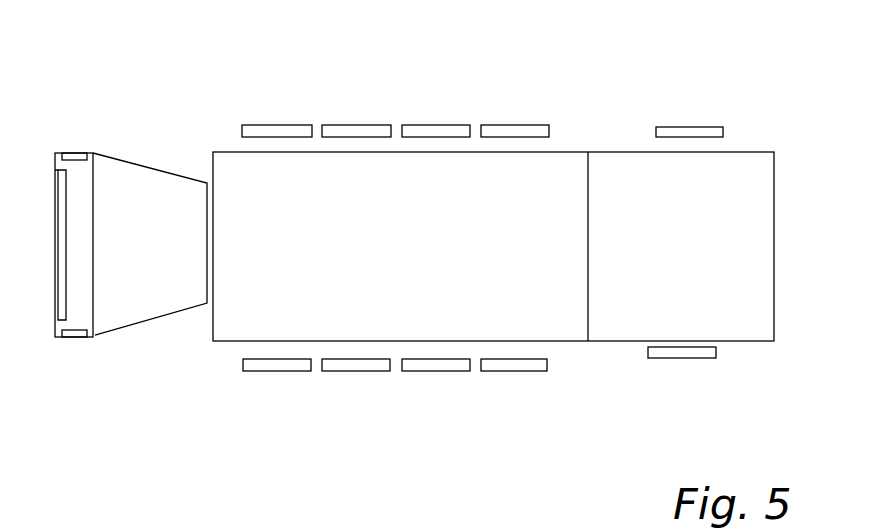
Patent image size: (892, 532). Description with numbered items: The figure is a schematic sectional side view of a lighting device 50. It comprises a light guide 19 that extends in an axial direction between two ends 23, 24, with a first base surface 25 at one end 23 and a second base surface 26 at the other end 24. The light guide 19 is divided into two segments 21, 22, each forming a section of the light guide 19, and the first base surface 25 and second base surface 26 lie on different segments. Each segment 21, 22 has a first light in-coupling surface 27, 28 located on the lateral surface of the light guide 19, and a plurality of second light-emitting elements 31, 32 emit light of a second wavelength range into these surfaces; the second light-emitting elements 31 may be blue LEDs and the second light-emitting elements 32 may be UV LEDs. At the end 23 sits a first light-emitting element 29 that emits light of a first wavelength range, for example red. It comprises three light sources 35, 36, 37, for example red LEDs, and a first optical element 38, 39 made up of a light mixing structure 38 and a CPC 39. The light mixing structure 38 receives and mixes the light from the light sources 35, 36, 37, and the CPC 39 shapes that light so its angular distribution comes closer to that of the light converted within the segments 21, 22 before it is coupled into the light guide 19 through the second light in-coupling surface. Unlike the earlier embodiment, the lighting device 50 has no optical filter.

The light guide 19 is at (575, 120).
The segment 21 is at (557, 313).
The segment 22 is at (610, 168).
The end 23 is at (174, 332).
The end 24 is at (800, 172).
The first base surface 25 is at (213, 332).
The second base surface 26 is at (774, 305).
The first light in-coupling surface 27 is at (393, 152).
The first light in-coupling surface 28 is at (733, 152).
The first light-emitting element 29 is at (56, 126).
The second light-emitting elements 31 is at (278, 125).
The second light-emitting elements 32 is at (690, 127).
The light source 35 is at (72, 336).
The light source 36 is at (55, 155).
The light source 37 is at (73, 157).
The light mixing structure 38 is at (90, 152).
The CPC 39 is at (113, 333).
The lighting device 50 is at (206, 78).